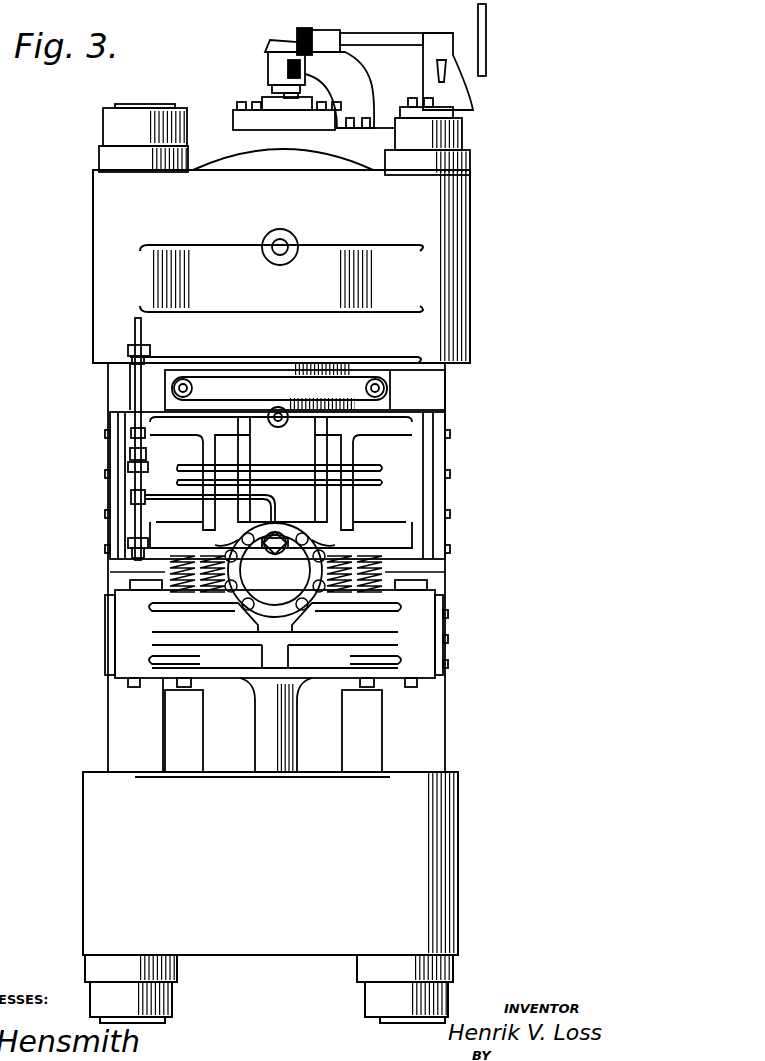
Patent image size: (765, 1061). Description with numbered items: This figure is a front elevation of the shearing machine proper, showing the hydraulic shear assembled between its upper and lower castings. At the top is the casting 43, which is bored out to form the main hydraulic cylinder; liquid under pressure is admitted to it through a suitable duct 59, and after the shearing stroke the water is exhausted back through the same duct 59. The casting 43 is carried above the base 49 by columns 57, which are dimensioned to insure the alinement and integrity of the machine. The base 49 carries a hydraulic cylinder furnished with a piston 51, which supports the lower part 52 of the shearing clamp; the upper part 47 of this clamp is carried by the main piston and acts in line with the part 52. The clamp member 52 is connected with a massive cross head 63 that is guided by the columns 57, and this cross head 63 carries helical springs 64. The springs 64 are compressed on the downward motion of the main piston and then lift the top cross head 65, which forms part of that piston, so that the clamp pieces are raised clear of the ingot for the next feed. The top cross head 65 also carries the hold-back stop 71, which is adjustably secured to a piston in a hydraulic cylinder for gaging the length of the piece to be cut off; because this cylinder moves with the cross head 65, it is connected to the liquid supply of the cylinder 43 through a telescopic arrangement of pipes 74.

The casting forming hydraulic cylinder 43 is at (100, 268).
The duct 59 is at (288, 243).
The top cross head 65 is at (277, 485).
The telescopic pipes 74 is at (135, 470).
The springs 64 is at (165, 572).
The shearing clamp upper part 47 is at (275, 570).
The stop 71 is at (275, 570).
The shearing clamp lower part 52 is at (275, 572).
The cross head 63 is at (125, 649).
The columns 57 is at (270, 725).
The piston 51 is at (262, 729).
The base 49 is at (270, 897).